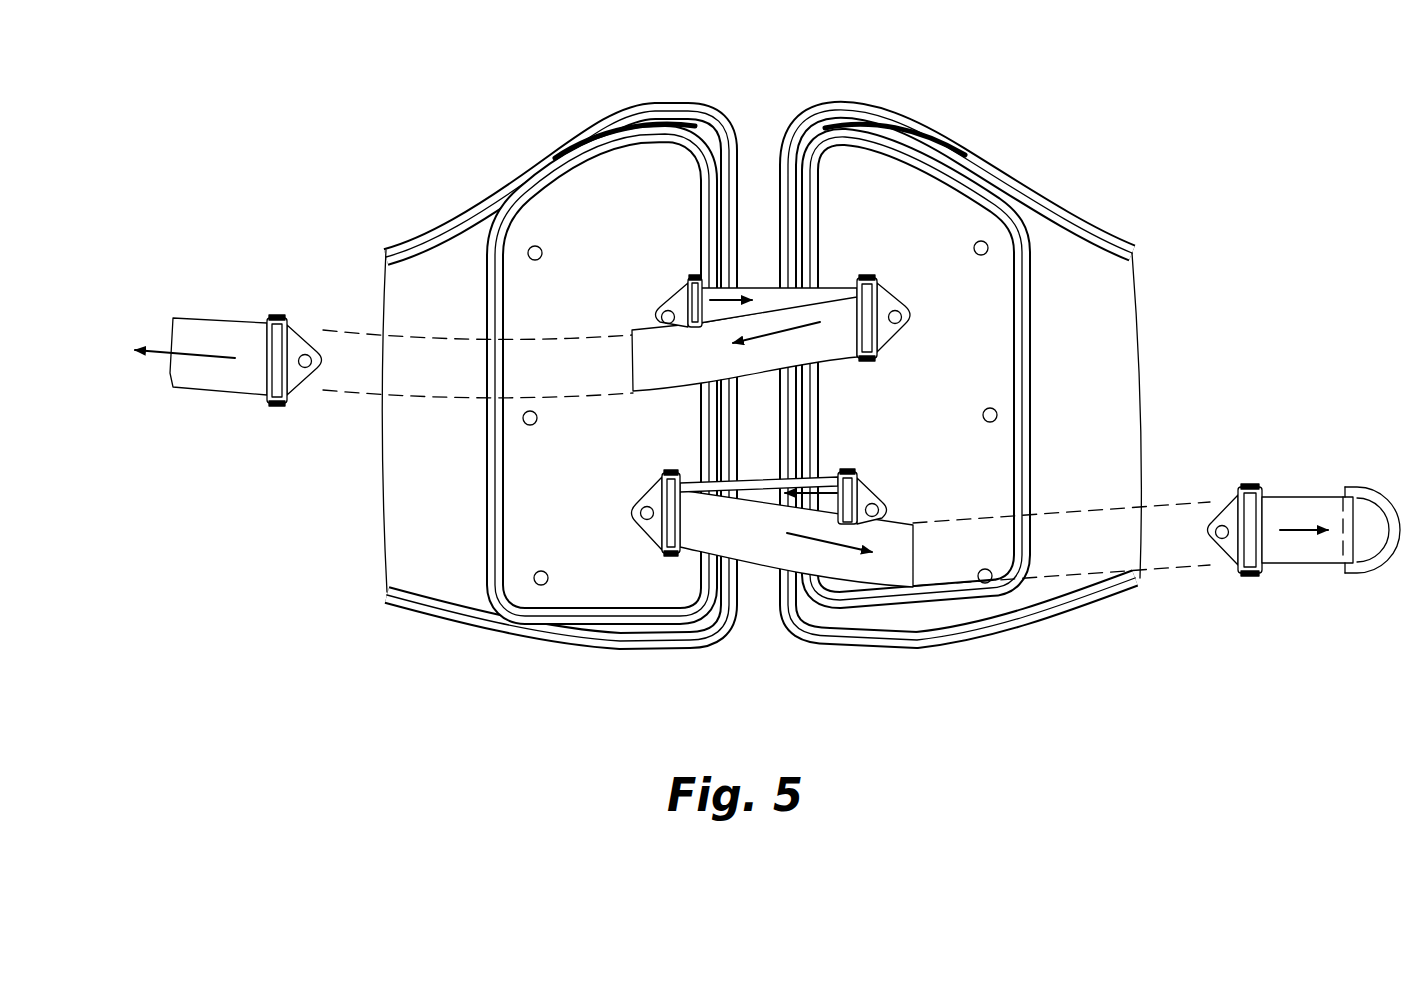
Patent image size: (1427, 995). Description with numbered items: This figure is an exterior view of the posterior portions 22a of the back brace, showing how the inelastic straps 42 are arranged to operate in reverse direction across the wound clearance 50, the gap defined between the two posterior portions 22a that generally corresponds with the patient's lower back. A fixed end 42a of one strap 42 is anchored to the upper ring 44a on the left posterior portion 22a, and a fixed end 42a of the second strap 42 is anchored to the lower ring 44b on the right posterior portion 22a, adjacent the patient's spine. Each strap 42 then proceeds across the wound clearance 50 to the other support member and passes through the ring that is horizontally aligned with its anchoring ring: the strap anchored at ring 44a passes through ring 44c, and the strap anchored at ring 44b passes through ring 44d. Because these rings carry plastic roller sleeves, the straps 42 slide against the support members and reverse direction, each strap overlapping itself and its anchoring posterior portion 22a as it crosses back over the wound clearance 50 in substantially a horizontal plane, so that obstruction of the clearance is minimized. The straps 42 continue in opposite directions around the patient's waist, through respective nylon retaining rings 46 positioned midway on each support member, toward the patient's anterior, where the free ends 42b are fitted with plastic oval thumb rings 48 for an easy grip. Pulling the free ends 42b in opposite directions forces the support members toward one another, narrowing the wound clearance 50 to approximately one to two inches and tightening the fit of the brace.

The wound clearance 50 is at (762, 135).
The posterior portion 22a is at (583, 230).
The inelastic strap 42 is at (220, 383).
The fixed end 42a is at (695, 283).
The free end 42b is at (1280, 507).
The upper ring 44a is at (662, 298).
The lower ring 44b is at (890, 500).
The ring 44c is at (893, 333).
The ring 44d is at (648, 537).
The retaining ring 46 is at (273, 405).
The thumb ring 48 is at (1387, 492).